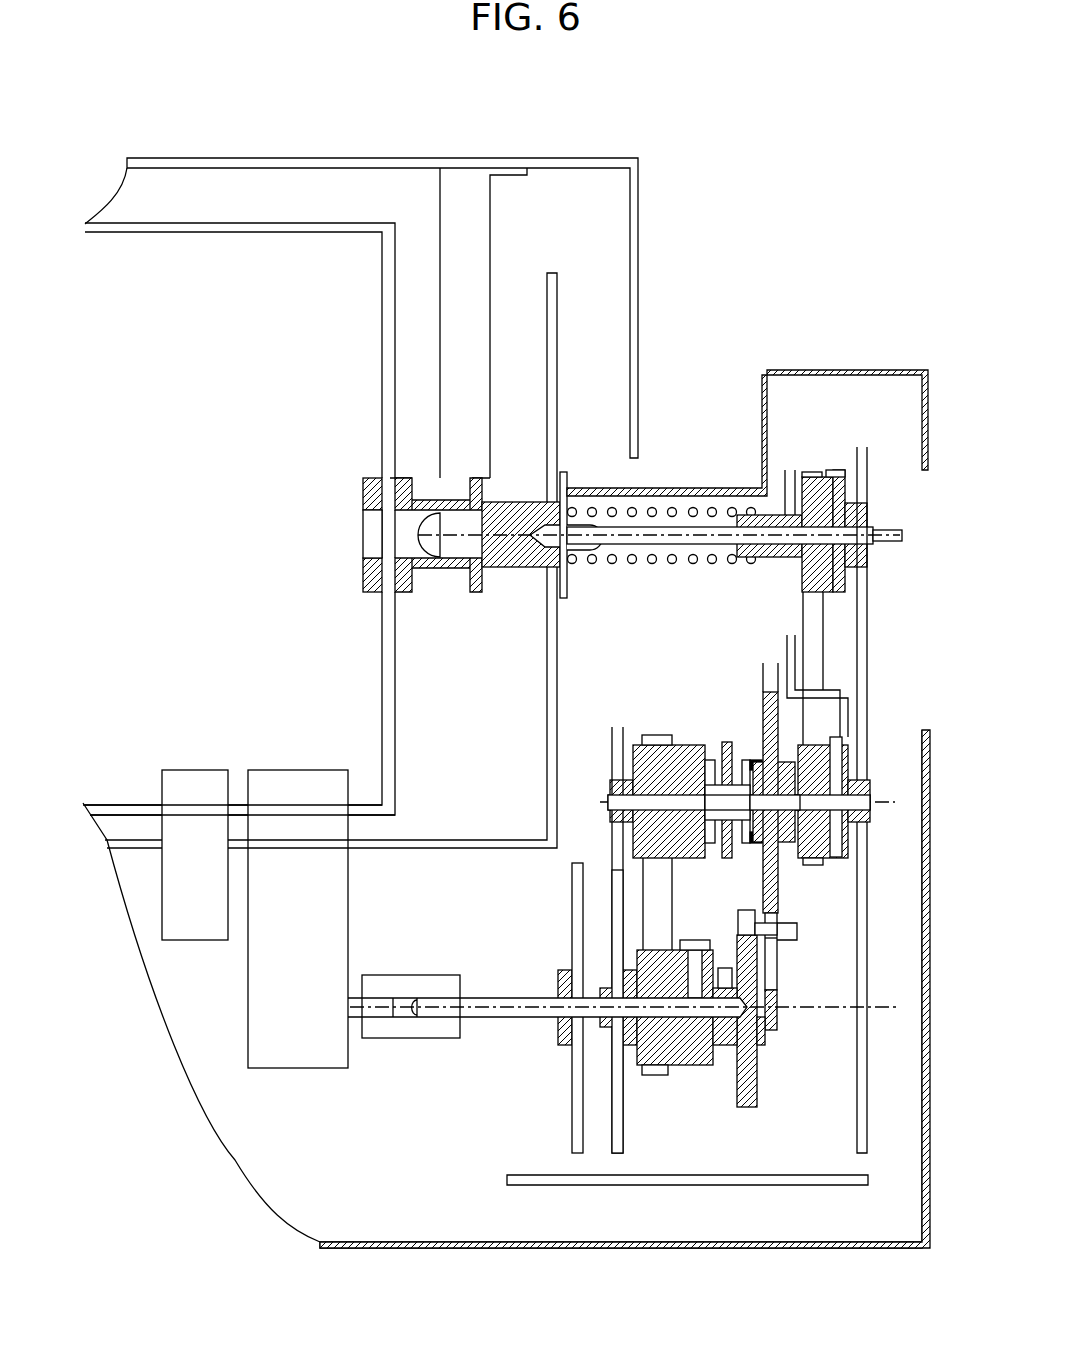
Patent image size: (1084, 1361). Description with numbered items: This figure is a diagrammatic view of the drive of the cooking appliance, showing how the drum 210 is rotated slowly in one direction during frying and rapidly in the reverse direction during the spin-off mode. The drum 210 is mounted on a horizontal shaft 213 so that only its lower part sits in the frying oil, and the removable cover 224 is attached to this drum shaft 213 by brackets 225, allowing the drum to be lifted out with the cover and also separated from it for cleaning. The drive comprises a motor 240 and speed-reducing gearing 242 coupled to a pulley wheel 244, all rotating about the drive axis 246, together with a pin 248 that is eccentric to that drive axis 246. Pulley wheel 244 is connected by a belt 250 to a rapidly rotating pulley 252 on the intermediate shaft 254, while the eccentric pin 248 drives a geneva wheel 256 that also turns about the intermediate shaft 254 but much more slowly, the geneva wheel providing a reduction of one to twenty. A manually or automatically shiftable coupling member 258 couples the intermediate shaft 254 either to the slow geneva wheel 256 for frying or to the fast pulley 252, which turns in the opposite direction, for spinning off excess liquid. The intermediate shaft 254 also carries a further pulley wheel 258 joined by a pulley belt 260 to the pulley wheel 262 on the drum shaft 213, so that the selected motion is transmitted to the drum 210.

The removable cover 224 is at (290, 158).
The drum 210 is at (232, 232).
The brackets 225 is at (486, 228).
The horizontal shaft 213 is at (363, 496).
The pulley wheel 262 is at (802, 477).
The pulley belt 260 is at (817, 616).
The intermediate shaft 254 is at (594, 804).
The pulley wheel 252 is at (640, 745).
The coupling member 258 is at (728, 742).
The geneva wheel 256 is at (778, 878).
The belt 250 is at (662, 895).
The eccentric pin 248 is at (780, 938).
The drive axis 246 is at (790, 1010).
The pulley wheel 244 is at (673, 1066).
The motor 240 is at (183, 940).
The speed-reducing gearing 242 is at (290, 1068).